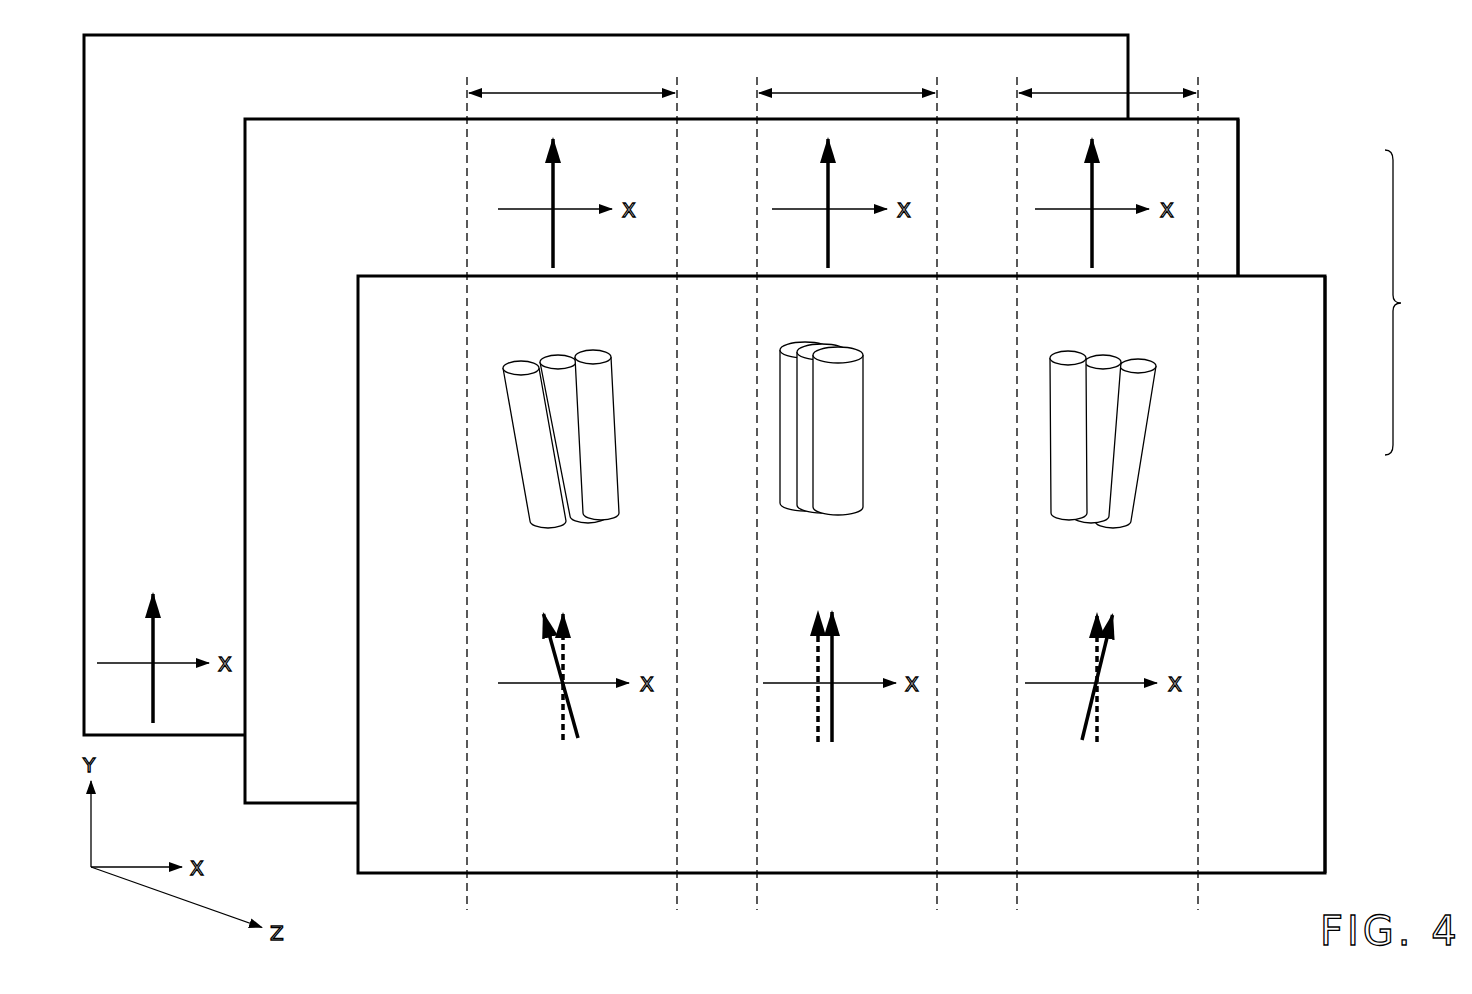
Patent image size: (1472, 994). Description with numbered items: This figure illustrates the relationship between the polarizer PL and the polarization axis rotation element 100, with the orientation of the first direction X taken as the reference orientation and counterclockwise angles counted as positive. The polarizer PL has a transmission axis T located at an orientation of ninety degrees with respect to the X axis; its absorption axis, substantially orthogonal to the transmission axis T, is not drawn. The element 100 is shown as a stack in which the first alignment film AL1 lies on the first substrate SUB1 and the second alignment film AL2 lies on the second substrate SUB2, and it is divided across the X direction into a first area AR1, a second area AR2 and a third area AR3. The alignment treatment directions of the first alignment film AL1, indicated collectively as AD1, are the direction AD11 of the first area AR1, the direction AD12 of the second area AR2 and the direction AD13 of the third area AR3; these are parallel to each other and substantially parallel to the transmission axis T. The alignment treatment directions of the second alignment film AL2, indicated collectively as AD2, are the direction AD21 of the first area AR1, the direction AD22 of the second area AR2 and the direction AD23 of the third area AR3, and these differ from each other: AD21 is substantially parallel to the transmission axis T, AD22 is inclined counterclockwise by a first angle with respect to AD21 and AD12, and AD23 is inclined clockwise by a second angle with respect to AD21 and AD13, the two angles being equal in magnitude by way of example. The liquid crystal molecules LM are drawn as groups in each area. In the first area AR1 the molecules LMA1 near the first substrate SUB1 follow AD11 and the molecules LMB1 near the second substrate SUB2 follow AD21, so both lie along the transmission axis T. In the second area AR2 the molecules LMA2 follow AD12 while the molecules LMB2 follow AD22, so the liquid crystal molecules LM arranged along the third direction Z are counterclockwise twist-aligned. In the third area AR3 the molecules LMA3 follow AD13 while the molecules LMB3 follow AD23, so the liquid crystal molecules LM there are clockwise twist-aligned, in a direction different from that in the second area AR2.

The polarizer PL is at (1128, 50).
The first substrate SUB1 is at (1243, 185).
The second substrate SUB2 is at (1327, 457).
The first alignment film AL1 is at (1228, 240).
The second alignment film AL2 is at (1315, 522).
The polarization axis rotation element 100 is at (1416, 302).
The first area AR1 is at (847, 79).
The second area AR2 is at (572, 79).
The third area AR3 is at (1107, 79).
The first alignment direction AD1 is at (496, 190).
The second alignment direction AD2 is at (496, 663).
The alignment treatment direction AD11 is at (831, 172).
The alignment treatment direction AD12 is at (556, 172).
The alignment treatment direction AD13 is at (1095, 172).
The alignment treatment direction AD21 is at (836, 648).
The alignment treatment direction AD22 is at (548, 652).
The alignment treatment direction AD23 is at (1107, 652).
The liquid crystal molecules LM is at (831, 428).
The liquid crystal molecules LMA1 is at (780, 387).
The liquid crystal molecules LMA2 is at (612, 410).
The liquid crystal molecules LMA3 is at (1050, 387).
The liquid crystal molecules LMB1 is at (845, 404).
The liquid crystal molecules LMB2 is at (570, 448).
The liquid crystal molecules LMB3 is at (1106, 425).
The transmission axis T is at (156, 627).